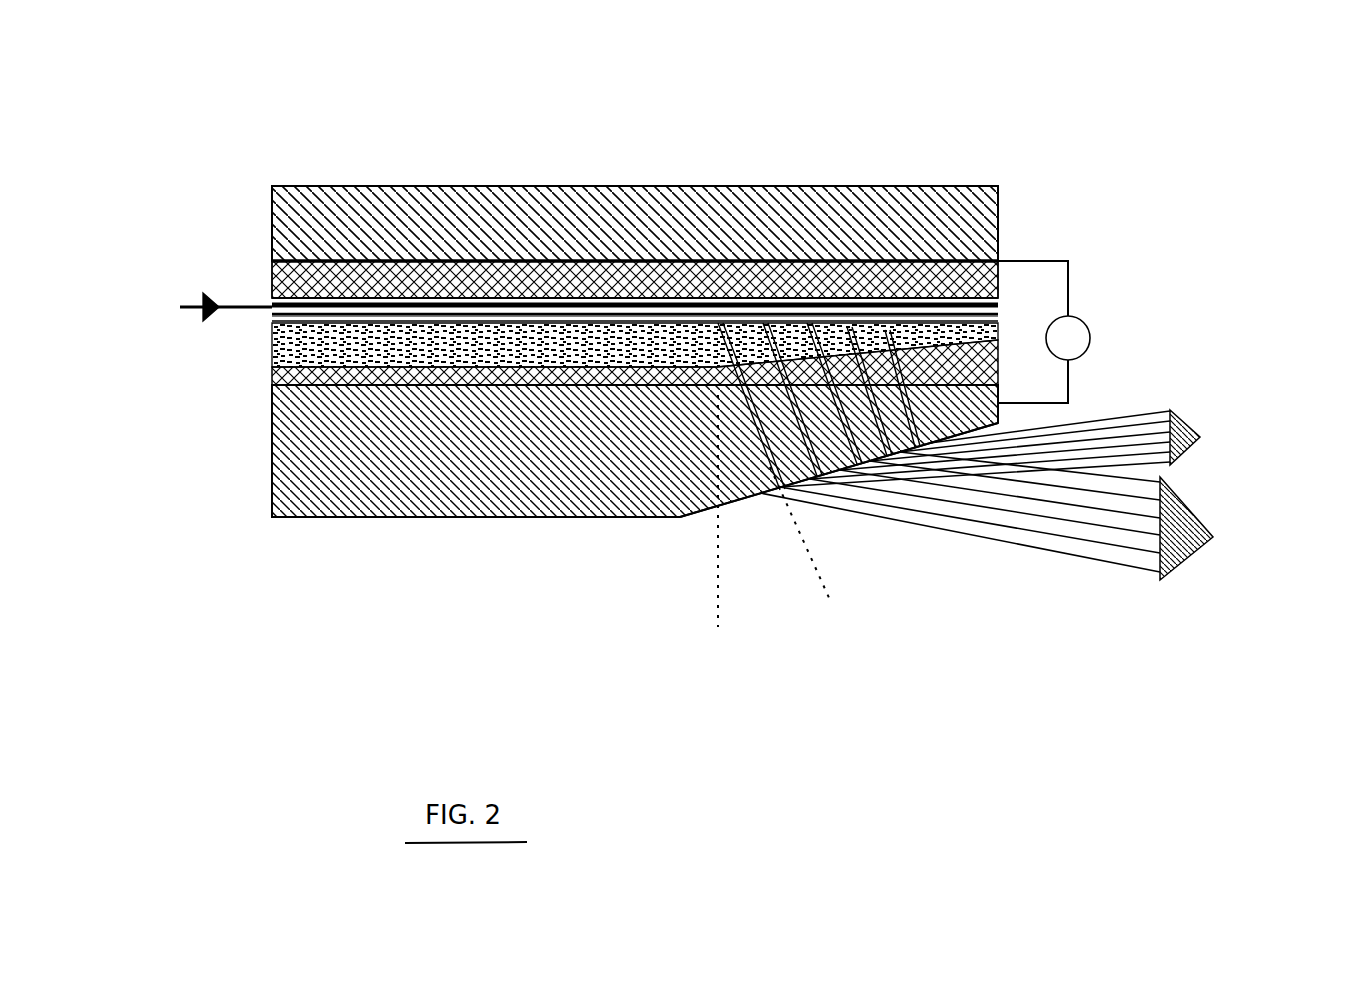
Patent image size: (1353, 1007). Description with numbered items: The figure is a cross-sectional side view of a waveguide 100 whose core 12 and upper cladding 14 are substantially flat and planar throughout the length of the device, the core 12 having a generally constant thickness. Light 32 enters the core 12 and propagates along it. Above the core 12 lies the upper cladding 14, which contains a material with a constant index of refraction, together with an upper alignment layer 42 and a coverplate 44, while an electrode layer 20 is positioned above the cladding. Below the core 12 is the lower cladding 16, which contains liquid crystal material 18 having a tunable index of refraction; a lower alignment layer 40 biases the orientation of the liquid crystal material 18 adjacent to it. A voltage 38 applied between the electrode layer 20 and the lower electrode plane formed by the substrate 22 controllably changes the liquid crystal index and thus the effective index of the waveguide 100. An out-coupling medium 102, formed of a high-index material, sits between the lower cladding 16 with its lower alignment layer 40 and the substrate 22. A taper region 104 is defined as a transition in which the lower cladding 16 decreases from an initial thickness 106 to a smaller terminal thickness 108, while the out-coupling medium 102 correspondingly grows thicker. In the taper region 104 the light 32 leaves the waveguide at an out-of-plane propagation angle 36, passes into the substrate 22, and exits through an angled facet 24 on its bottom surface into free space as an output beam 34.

The waveguide 100 is at (98, 842).
The core 12 is at (272, 302).
The upper cladding 14 is at (500, 270).
The lower cladding 16 is at (382, 352).
The liquid crystal material 18 is at (408, 352).
The electrode layer 20 is at (908, 333).
The substrate 22 is at (292, 450).
The angled facet 24 is at (710, 510).
The light 32 is at (192, 303).
The output beam 34 is at (1200, 450).
The propagation angle 36 is at (763, 597).
The voltage 38 is at (1088, 330).
The lower alignment layer 40 is at (272, 372).
The upper alignment layer 42 is at (272, 320).
The coverplate 44 is at (385, 222).
The out-coupling medium 102 is at (680, 343).
The taper region 104 is at (903, 332).
The initial thickness 106 is at (478, 355).
The terminal thickness 108 is at (963, 333).